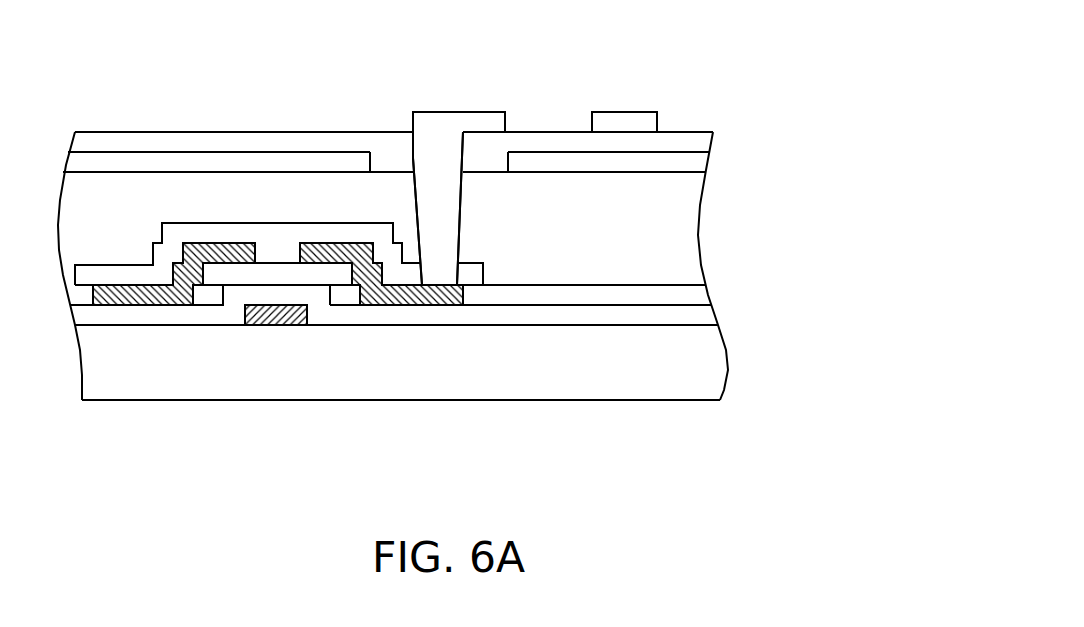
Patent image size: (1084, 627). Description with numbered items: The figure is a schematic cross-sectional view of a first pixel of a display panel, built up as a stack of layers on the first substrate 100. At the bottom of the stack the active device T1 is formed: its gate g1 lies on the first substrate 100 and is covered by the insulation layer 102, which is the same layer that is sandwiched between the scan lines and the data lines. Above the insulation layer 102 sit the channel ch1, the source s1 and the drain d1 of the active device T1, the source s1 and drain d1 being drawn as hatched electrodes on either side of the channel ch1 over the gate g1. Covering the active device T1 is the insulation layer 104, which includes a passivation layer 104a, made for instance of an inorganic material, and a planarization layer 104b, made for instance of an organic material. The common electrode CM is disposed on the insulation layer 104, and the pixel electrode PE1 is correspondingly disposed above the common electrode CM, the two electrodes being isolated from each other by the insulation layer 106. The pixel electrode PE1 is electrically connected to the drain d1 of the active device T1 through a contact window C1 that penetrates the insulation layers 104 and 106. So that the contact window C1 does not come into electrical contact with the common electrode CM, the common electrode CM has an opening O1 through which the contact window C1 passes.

The first substrate 100 is at (693, 365).
The insulation layer 102 is at (700, 317).
The insulation layer 104 is at (465, 252).
The passivation layer 104a is at (695, 297).
The planarization layer 104b is at (690, 233).
The insulation layer 106 is at (698, 143).
The common electrode CM is at (698, 163).
The opening O1 is at (372, 156).
The contact window C1 is at (417, 163).
The pixel electrode PE1 is at (484, 122).
The active device T1 is at (278, 375).
The source s1 is at (167, 297).
The channel ch1 is at (212, 290).
The gate g1 is at (277, 318).
The drain d1 is at (381, 347).